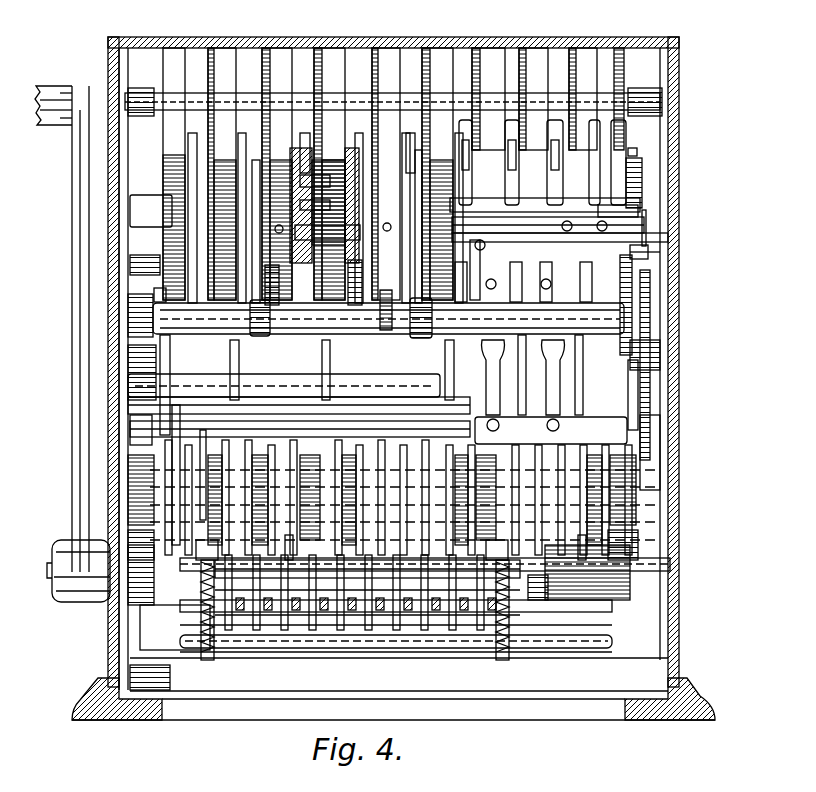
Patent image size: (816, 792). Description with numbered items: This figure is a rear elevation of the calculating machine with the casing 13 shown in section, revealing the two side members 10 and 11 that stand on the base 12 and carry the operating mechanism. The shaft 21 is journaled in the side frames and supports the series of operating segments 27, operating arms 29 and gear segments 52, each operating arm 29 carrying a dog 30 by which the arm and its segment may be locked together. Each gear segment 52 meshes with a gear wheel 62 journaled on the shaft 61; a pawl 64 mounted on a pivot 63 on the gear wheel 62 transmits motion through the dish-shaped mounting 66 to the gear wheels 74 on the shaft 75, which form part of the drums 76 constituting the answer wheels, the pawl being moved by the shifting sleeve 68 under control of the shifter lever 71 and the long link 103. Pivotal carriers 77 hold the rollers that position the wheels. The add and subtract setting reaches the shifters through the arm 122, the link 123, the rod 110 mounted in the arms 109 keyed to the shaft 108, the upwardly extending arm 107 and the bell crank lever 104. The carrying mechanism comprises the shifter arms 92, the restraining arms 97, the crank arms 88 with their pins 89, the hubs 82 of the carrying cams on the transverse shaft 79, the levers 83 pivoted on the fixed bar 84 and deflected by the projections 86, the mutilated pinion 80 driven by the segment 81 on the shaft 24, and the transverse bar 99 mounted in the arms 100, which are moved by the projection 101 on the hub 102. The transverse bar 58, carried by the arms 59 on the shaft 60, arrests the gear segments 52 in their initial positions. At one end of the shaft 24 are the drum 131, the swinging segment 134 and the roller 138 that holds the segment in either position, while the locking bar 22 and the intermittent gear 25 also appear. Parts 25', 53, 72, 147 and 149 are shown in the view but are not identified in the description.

The side member 10 is at (663, 450).
The side member 11 is at (122, 415).
The base 12 is at (393, 689).
The casing 13 is at (110, 458).
The shaft 21 is at (405, 497).
The locking bar 22 is at (628, 472).
The shaft 24 is at (272, 605).
The intermittent gear 25 is at (425, 535).
The operating lever 25' is at (57, 329).
The operating segment 27 is at (228, 462).
The operating arm 29 is at (238, 490).
The dog 30 is at (209, 470).
The gear segment 52 is at (512, 480).
The link 53 is at (180, 475).
The transverse bar 58 is at (623, 637).
The arm 59 is at (215, 570).
The shaft 60 is at (630, 560).
The shaft 61 is at (185, 215).
The gear wheel 62 is at (190, 180).
The pivot 63 is at (300, 185).
The pawl 64 is at (305, 170).
The dish-shaped mounting 66 is at (640, 168).
The shifting sleeve 68 is at (210, 225).
The shifter lever 71 is at (650, 233).
The plate 72 is at (690, 187).
The gear wheel 74 is at (619, 52).
The shaft 75 is at (296, 100).
The drum 76 is at (222, 52).
The pivotal carrier 77 is at (636, 134).
The transverse shaft 79 is at (698, 282).
The mutilated pinion 80 is at (147, 307).
The segment 81 is at (165, 380).
The hub 82 is at (470, 270).
The lever 83 is at (519, 405).
The fixed bar 84 is at (704, 410).
The roller or stud-like projection 86 is at (637, 152).
The crank arm 88 is at (336, 385).
The pin 89 is at (428, 292).
The shifter arm 92 is at (406, 375).
The restraining arm 97 is at (520, 400).
The transverse bar 99 is at (300, 429).
The arm 100 is at (290, 510).
The projection 101 is at (423, 546).
The hub 102 is at (204, 540).
The long link 103 is at (569, 222).
The bell crank lever 104 is at (648, 218).
The upwardly extending arm 107 is at (626, 206).
The shaft 108 is at (178, 306).
The arm 109 is at (250, 318).
The rod 110 is at (299, 405).
The arm 122 is at (658, 264).
The link 123 is at (640, 355).
The drum 131 is at (100, 566).
The swinging segment 134 is at (184, 662).
The roller 138 is at (172, 676).
The rod 147 is at (325, 632).
The rack 149 is at (358, 575).